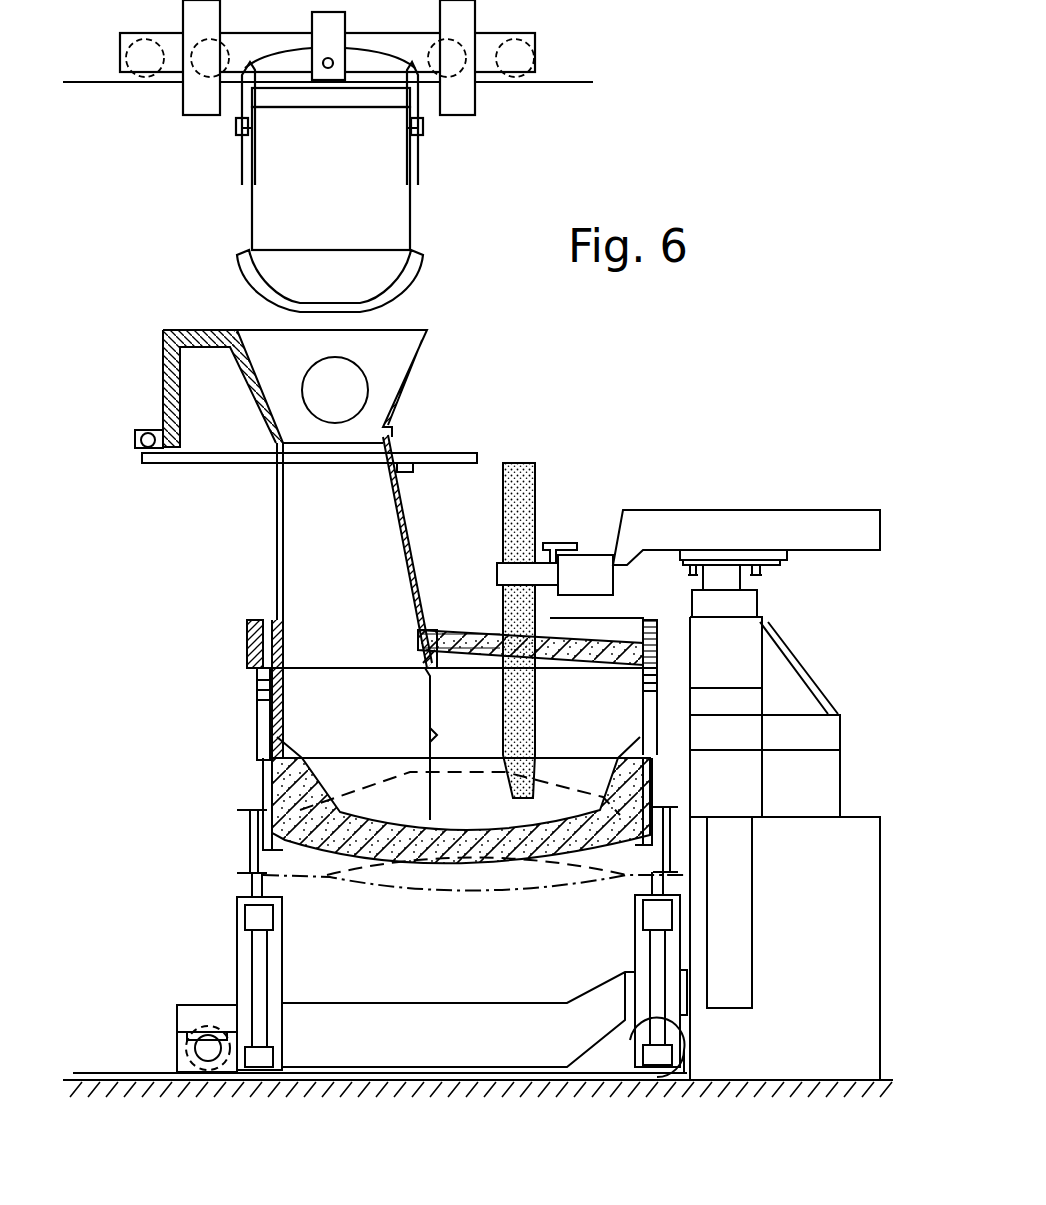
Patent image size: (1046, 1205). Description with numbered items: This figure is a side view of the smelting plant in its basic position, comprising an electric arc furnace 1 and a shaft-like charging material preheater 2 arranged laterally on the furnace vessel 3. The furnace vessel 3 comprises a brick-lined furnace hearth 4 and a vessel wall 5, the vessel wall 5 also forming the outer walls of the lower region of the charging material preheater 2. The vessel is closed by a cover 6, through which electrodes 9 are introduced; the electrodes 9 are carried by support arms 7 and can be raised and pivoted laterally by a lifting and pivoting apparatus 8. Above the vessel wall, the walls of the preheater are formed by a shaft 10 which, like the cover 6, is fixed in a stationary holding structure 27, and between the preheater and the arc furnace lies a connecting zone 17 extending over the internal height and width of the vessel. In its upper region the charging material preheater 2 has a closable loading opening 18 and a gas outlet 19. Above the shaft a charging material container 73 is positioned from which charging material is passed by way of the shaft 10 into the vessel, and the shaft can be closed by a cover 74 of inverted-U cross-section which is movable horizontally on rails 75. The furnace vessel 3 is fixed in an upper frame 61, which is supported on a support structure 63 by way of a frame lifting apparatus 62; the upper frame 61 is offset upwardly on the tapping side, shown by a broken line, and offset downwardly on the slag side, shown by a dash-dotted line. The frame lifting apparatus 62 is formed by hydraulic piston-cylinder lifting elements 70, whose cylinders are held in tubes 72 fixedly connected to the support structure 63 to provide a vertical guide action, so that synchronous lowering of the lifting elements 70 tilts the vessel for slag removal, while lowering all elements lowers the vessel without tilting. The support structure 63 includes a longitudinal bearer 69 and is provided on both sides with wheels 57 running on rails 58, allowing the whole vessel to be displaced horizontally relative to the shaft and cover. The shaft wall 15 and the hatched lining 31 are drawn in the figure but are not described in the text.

The electric arc furnace 1 is at (585, 517).
The charging material preheater 2 is at (412, 523).
The furnace vessel 3 is at (249, 684).
The furnace hearth 4 is at (507, 865).
The vessel wall 5 is at (265, 722).
The cover 6 is at (615, 655).
The support arms 7 is at (750, 520).
The lifting and pivoting apparatus 8 is at (798, 650).
The electrodes 9 is at (537, 495).
The shaft 10 is at (410, 575).
The shaft side wall 15 is at (292, 537).
The connecting zone 17 is at (446, 744).
The loading opening 18 is at (317, 448).
The gas outlet 19 is at (350, 385).
The holding structure 27 is at (247, 643).
The cover lining 31 is at (480, 685).
The wheels 57 is at (186, 1058).
The rails 58 is at (366, 1083).
The upper frame 61 is at (378, 782).
The frame lifting apparatus 62 is at (233, 911).
The support structure 63 is at (428, 1002).
The longitudinal bearer 69 is at (452, 1048).
The lifting elements 70 is at (262, 972).
The tubes 72 is at (237, 962).
The charging material container 73 is at (397, 230).
The cover 74 is at (200, 342).
The rails 75 is at (200, 462).